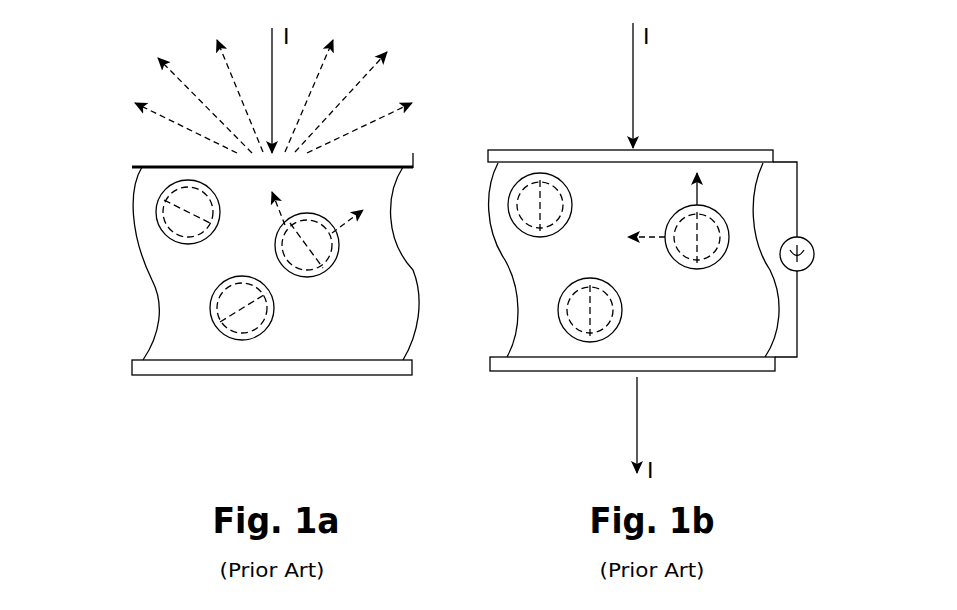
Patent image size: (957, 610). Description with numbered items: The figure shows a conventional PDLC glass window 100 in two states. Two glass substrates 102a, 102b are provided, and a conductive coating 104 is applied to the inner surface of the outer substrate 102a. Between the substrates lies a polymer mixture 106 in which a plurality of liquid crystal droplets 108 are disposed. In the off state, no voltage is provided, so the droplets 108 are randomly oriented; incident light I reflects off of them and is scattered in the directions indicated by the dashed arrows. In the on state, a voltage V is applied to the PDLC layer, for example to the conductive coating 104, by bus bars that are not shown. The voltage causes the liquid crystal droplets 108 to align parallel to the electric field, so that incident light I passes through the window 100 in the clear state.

In FIG. 1A, the PDLC glass window 100 is at (103, 152).
In FIG. 1B, the PDLC glass window 100 is at (813, 133).
In FIG. 1A, the outer glass substrate 102a is at (403, 162).
In FIG. 1B, the outer glass substrate 102a is at (745, 155).
In FIG. 1A, the glass substrate 102b is at (267, 372).
In FIG. 1B, the glass substrate 102b is at (745, 372).
In FIG. 1A, the conductive coating 104 is at (418, 173).
In FIG. 1B, the conductive coating 104 is at (634, 260).
In FIG. 1A, the polymer mixture 106 is at (537, 340).
In FIG. 1A, the liquid crystal droplets 108 is at (283, 255).
In FIG. 1B, the liquid crystal droplets 108 is at (665, 248).